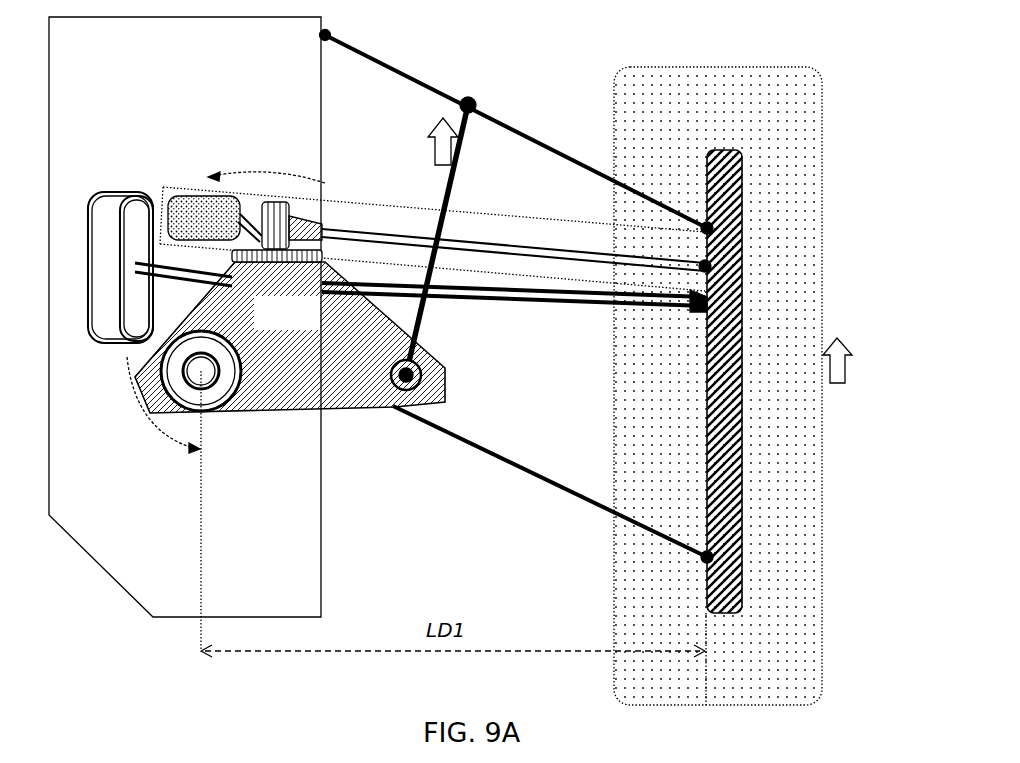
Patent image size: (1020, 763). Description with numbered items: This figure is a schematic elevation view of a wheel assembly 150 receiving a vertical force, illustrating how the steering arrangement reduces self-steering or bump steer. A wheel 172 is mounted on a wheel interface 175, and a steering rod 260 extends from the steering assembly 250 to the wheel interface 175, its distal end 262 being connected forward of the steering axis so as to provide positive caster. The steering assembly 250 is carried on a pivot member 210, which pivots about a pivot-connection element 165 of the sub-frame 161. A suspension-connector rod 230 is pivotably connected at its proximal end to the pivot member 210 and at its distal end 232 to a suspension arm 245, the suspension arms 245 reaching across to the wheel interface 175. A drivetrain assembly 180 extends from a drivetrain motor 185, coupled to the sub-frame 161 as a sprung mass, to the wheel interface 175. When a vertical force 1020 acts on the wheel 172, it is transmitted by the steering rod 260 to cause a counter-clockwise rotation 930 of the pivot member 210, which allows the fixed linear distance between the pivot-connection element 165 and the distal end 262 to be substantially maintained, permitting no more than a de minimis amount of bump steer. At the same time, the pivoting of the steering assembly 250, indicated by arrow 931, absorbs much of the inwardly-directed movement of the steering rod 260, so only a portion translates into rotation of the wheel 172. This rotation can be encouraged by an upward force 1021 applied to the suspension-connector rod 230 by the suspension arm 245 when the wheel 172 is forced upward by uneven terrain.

The wheel assembly 150 is at (832, 53).
The sub-frame 161 is at (130, 75).
The pivot-connection element 165 is at (204, 385).
The wheel 172 is at (792, 111).
The wheel interface 175 is at (706, 409).
The drivetrain assembly 180 is at (587, 307).
The drivetrain motor 185 is at (85, 268).
The pivot member 210 is at (310, 327).
The suspension-connector rod 230 is at (464, 141).
The distal end of suspension-connector rod 232 is at (476, 101).
The suspension arm 245 is at (568, 150).
The steering assembly 250 is at (322, 208).
The steering rod 260 is at (530, 245).
The distal end of steering rod 262 is at (703, 258).
The counter-clockwise rotation arrow 930 is at (158, 438).
The pivoting arrow of steering assembly 931 is at (256, 166).
The vertical force 1020 is at (853, 366).
The upward force 1021 is at (427, 133).